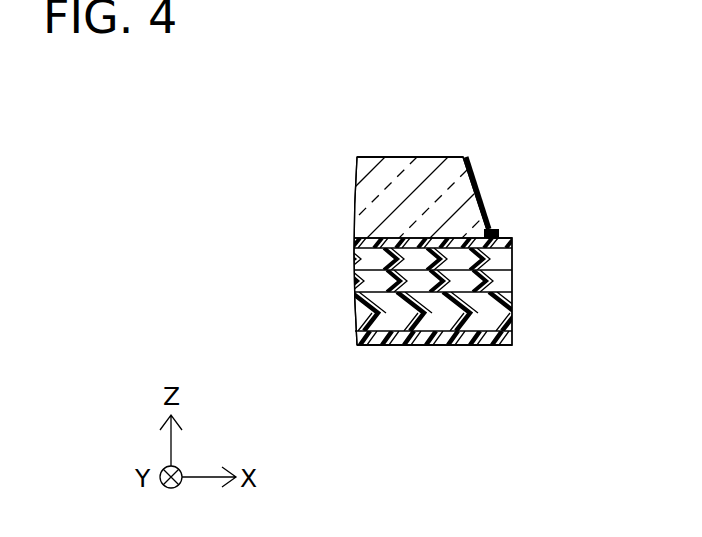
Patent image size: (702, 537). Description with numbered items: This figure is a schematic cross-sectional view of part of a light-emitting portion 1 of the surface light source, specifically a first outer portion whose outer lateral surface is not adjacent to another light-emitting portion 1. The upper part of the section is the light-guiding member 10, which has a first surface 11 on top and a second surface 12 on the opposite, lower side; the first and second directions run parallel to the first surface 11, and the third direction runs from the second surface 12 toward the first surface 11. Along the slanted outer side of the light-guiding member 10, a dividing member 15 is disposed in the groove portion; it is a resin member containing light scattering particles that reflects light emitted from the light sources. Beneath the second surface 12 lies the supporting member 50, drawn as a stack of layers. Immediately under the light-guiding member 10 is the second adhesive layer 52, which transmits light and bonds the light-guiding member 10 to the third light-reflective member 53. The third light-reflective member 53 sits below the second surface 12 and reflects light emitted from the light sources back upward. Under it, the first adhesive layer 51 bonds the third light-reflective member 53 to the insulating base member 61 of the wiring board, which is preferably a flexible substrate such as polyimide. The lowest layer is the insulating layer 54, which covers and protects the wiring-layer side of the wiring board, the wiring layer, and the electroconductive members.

The light-emitting portion 1 is at (447, 134).
The light-guiding member 10 is at (338, 160).
The first surface 11 is at (373, 156).
The second surface 12 is at (355, 238).
The dividing member 15 is at (474, 182).
The supporting member 50 is at (338, 250).
The first adhesive layer 51 is at (497, 287).
The second adhesive layer 52 is at (505, 240).
The third light-reflective member 53 is at (497, 260).
The insulating layer 54 is at (464, 333).
The insulating base member 61 is at (505, 318).